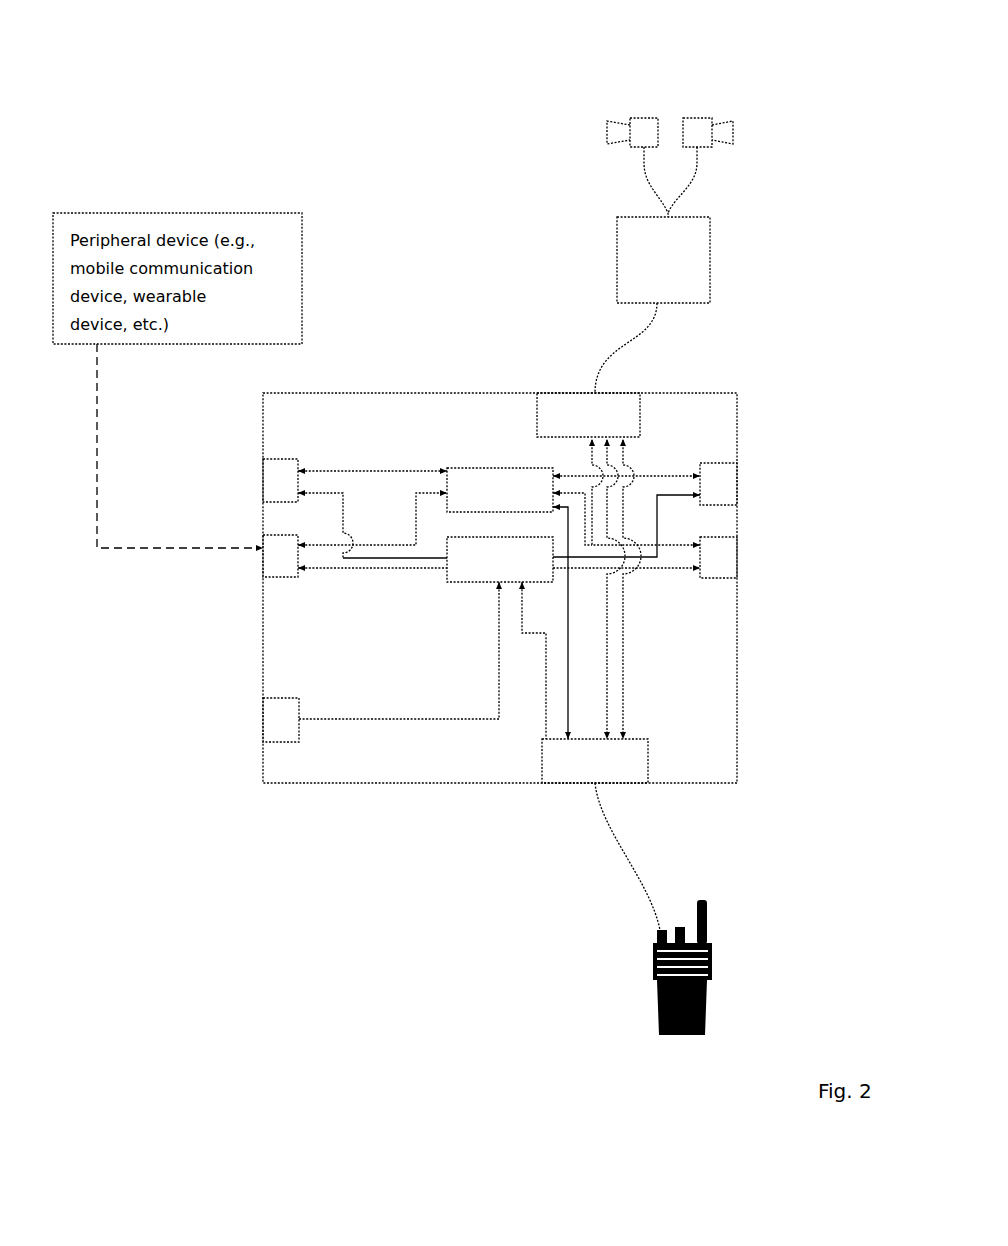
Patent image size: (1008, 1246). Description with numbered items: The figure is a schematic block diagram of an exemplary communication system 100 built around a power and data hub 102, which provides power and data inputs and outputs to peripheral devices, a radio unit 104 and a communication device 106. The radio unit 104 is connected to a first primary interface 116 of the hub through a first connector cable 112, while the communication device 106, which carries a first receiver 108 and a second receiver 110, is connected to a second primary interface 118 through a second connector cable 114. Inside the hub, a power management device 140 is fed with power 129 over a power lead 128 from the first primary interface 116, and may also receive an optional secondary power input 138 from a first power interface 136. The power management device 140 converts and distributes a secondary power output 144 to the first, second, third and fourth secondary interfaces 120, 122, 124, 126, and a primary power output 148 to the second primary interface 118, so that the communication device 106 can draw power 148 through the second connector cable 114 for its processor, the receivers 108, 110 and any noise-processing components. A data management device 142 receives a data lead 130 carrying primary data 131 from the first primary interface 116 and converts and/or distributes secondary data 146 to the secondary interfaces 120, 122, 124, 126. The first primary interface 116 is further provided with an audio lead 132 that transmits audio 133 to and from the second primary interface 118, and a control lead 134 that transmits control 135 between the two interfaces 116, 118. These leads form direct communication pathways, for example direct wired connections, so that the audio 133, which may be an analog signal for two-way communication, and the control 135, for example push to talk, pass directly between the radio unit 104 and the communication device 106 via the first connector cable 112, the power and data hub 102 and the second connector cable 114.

The communication system 100 is at (246, 98).
The power and data hub 102 is at (283, 784).
The radio unit 104 is at (653, 975).
The communication device 106 is at (617, 255).
The first receiver 108 is at (642, 127).
The second receiver 110 is at (698, 128).
The first connector cable 112 is at (607, 833).
The second connector cable 114 is at (632, 348).
The first primary interface 116 is at (637, 783).
The second primary interface 118 is at (542, 390).
The first secondary interface 120 is at (272, 555).
The second secondary interface 122 is at (272, 473).
The third secondary interface 124 is at (730, 557).
The fourth secondary interface 126 is at (730, 480).
The power lead 128 is at (545, 680).
The power 129 is at (545, 707).
The data lead 130 is at (567, 658).
The primary data 131 is at (567, 623).
The audio lead 132 is at (607, 697).
The audio 133 is at (607, 722).
The control lead 134 is at (623, 667).
The control 135 is at (623, 630).
The first power interface 136 is at (270, 720).
The secondary power input 138 is at (355, 718).
The power management device 140 is at (500, 559).
The data management device 142 is at (500, 490).
The secondary power output 144 is at (397, 569).
The secondary data 146 is at (358, 470).
The primary power output 148 is at (590, 470).